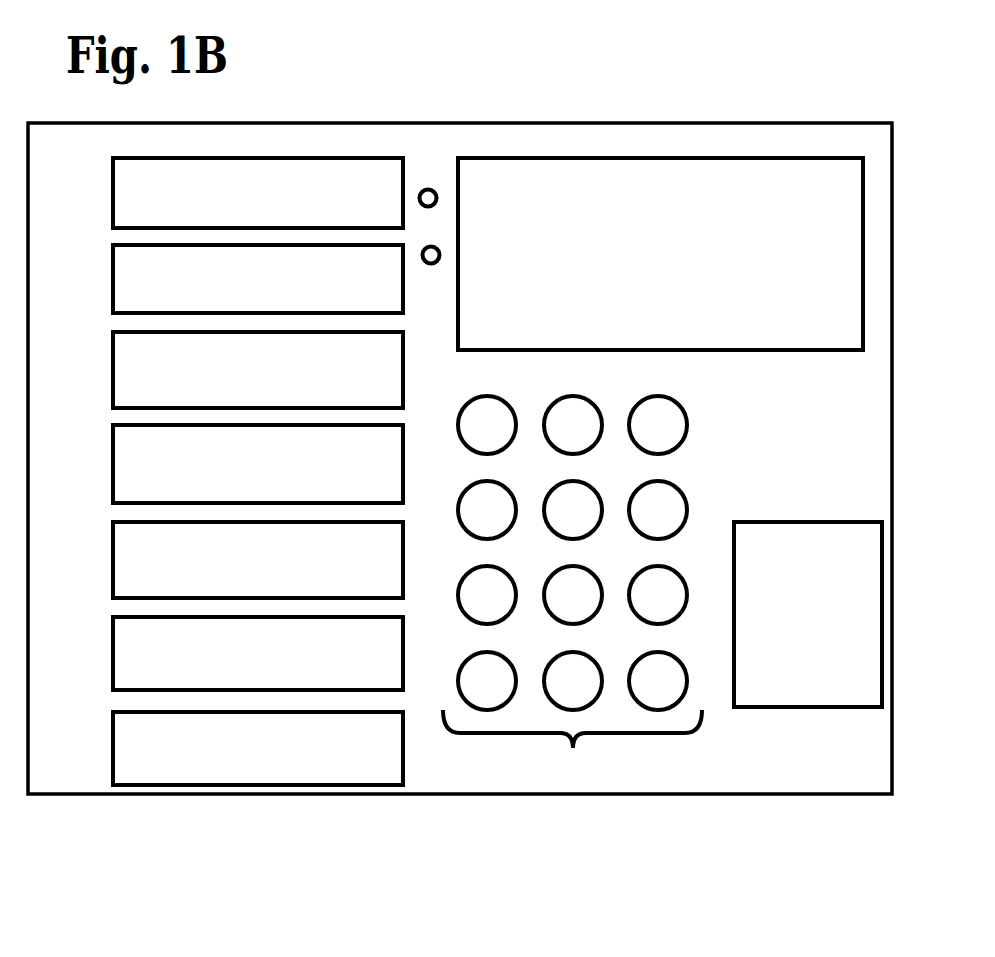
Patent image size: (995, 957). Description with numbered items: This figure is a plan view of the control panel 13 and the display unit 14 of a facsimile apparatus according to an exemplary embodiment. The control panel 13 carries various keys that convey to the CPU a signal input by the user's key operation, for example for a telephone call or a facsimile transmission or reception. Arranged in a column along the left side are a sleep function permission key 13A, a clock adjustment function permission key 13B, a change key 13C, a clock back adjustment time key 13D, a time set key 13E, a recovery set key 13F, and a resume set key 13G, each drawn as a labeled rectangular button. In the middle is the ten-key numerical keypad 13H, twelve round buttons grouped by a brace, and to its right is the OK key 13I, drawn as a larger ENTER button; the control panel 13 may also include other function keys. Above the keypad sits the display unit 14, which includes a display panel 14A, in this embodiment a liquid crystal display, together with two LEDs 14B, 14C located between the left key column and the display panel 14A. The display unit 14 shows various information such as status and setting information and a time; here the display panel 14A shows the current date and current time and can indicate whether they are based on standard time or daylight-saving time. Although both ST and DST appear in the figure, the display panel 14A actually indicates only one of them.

The control panel 13 is at (340, 826).
The sleep function permission key 13A is at (113, 212).
The clock adjustment function permission key 13B is at (113, 306).
The change key 13C is at (113, 388).
The clock back adjustment time key 13D is at (113, 484).
The time set key 13E is at (113, 578).
The recovery set key 13F is at (113, 671).
The resume set key 13G is at (113, 768).
The ten-key numerical keypad 13H is at (573, 757).
The OK key 13I is at (810, 707).
The display unit 14 is at (609, 207).
The display panel 14A is at (697, 157).
The LED 14B is at (427, 189).
The LED 14C is at (432, 245).